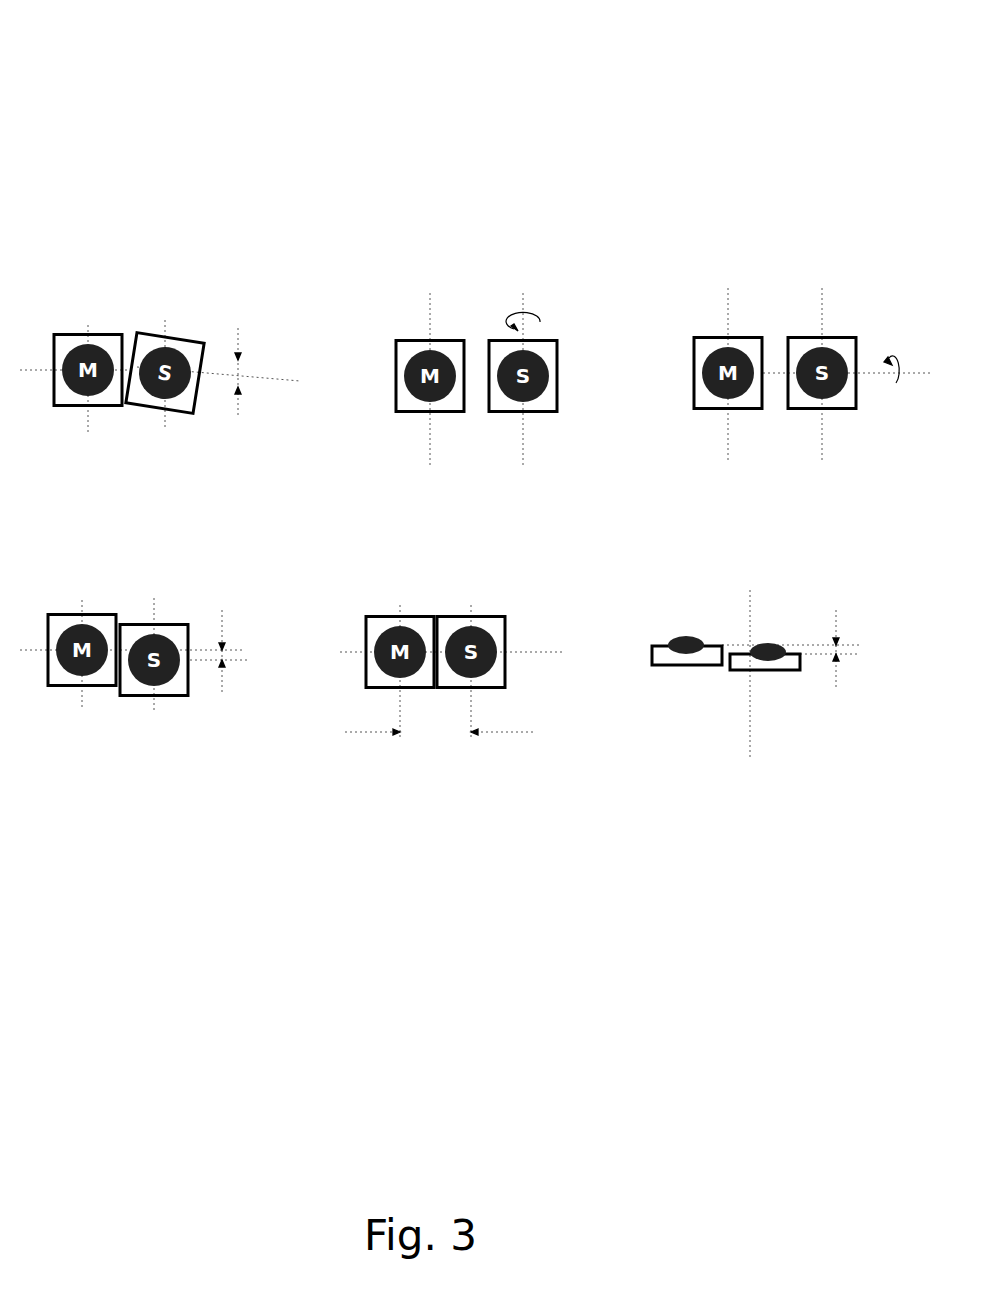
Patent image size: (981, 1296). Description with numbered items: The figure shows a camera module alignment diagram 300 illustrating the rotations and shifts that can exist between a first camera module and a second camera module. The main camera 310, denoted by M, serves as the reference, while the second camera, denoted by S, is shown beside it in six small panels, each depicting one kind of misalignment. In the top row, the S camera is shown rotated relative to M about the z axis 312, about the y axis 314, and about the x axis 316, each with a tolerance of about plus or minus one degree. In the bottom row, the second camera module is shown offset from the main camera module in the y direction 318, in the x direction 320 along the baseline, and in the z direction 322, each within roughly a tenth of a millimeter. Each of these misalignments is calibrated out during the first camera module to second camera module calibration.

The placement tolerance diagram 300 is at (100, 104).
The main camera 310 is at (86, 332).
The rotation about the z axis 312 is at (180, 336).
The rotation about the y axis 314 is at (567, 378).
The rotation about the x axis 316 is at (845, 336).
The offset in the y direction 318 is at (150, 698).
The offset in the x direction 320 is at (440, 630).
The offset in the z direction 322 is at (770, 669).